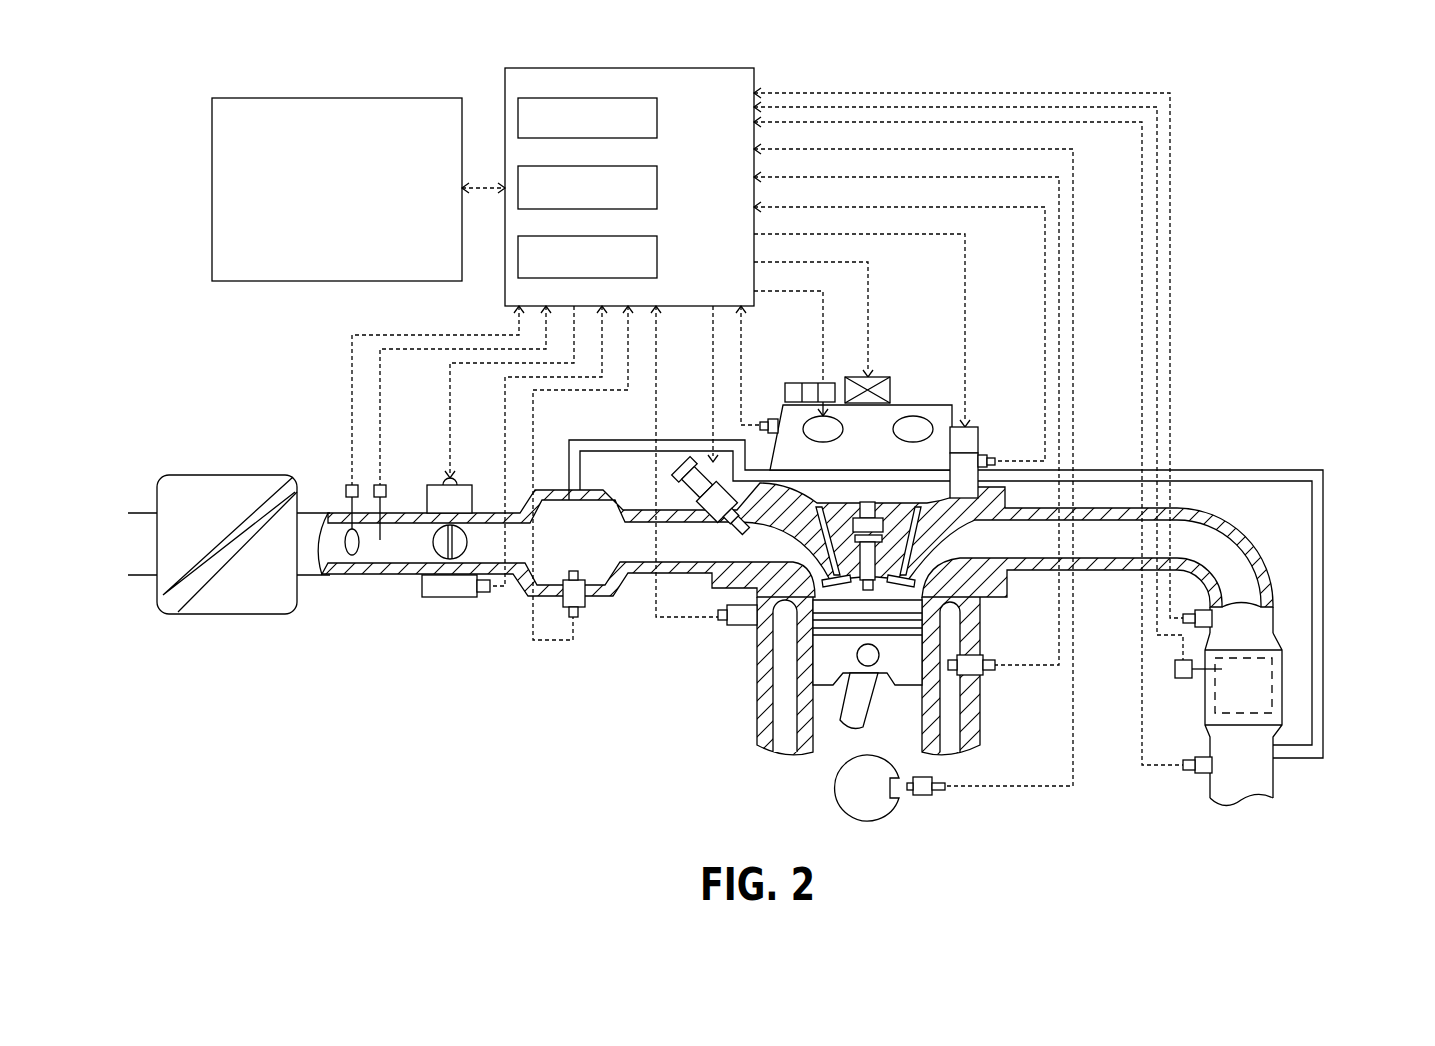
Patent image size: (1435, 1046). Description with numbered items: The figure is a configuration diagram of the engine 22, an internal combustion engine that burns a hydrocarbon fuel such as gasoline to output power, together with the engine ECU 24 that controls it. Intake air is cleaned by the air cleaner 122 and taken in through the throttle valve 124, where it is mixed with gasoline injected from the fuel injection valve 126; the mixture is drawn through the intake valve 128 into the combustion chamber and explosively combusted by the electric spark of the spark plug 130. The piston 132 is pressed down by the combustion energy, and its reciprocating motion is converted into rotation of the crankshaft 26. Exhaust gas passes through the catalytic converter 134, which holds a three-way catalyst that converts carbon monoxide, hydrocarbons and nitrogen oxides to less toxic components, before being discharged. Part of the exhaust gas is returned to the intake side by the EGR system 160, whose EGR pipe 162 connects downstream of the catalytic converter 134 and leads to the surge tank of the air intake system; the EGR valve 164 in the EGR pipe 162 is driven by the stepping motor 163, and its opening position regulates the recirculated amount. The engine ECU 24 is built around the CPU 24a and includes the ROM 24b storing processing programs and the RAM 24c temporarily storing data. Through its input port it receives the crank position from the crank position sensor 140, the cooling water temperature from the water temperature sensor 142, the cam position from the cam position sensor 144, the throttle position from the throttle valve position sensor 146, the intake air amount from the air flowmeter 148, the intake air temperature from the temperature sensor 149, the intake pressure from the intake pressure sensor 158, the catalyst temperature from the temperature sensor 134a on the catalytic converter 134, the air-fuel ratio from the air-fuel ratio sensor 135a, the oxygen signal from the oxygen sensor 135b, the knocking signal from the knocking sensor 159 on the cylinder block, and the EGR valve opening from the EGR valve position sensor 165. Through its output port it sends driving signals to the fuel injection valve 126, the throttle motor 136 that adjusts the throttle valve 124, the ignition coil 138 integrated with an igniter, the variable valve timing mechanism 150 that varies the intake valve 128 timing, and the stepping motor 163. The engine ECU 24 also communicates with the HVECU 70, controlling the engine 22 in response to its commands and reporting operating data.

The engine 22 is at (973, 361).
The engine ECU 24 is at (629, 68).
The CPU 24a is at (657, 117).
The ROM 24b is at (657, 186).
The RAM 24c is at (657, 256).
The crankshaft 26 is at (835, 790).
The HVECU 70 is at (338, 98).
The air cleaner 122 is at (227, 475).
The throttle valve 124 is at (466, 560).
The fuel injection valve 126 is at (683, 462).
The intake valve 128 is at (832, 572).
The spark plug 130 is at (885, 562).
The piston 132 is at (828, 668).
The catalytic converter 134 is at (1203, 703).
The temperature sensor 134a is at (1173, 658).
The air-fuel ratio sensor 135a is at (1182, 603).
The oxygen sensor 135b is at (1203, 777).
The throttle motor 136 is at (462, 485).
The ignition coil 138 is at (872, 372).
The crank position sensor 140 is at (927, 795).
The water temperature sensor 142 is at (983, 657).
The cam position sensor 144 is at (770, 418).
The throttle valve position sensor 146 is at (435, 597).
The air flowmeter 148 is at (345, 485).
The temperature sensor 149 is at (392, 485).
The variable valve timing mechanism 150 is at (908, 405).
The intake pressure sensor 158 is at (574, 617).
The knocking sensor 159 is at (740, 626).
The EGR system 160 is at (1243, 441).
The EGR pipe 162 is at (1323, 604).
The stepping motor 163 is at (980, 440).
The EGR valve 164 is at (978, 490).
The EGR valve position sensor 165 is at (992, 455).